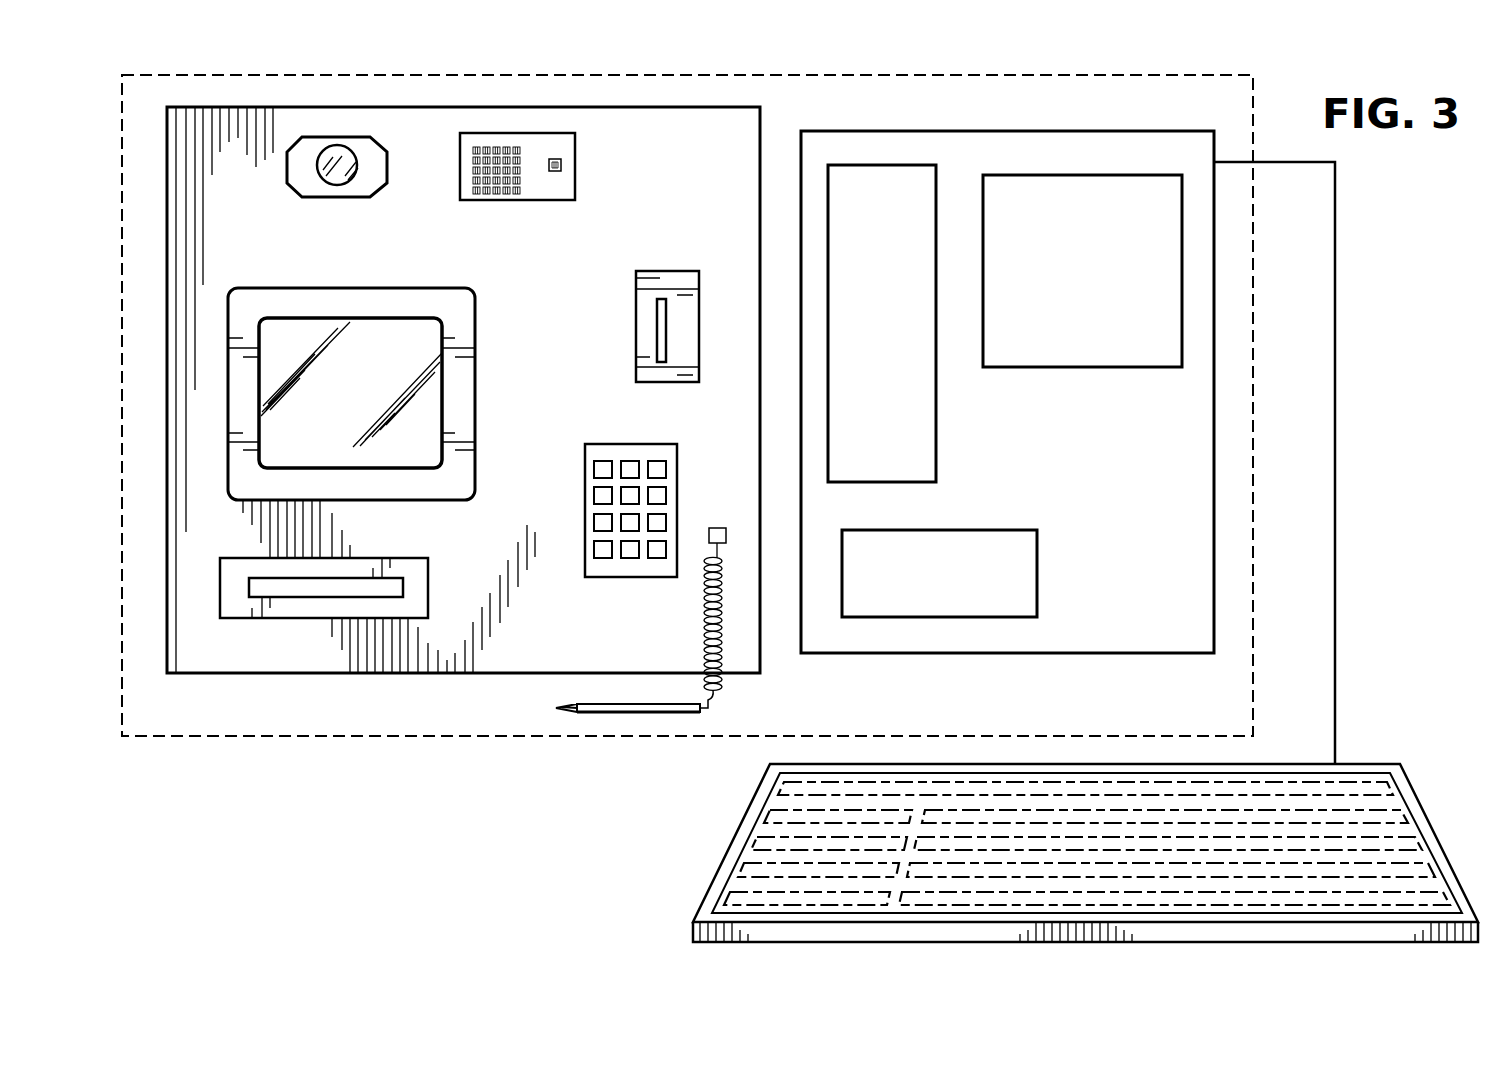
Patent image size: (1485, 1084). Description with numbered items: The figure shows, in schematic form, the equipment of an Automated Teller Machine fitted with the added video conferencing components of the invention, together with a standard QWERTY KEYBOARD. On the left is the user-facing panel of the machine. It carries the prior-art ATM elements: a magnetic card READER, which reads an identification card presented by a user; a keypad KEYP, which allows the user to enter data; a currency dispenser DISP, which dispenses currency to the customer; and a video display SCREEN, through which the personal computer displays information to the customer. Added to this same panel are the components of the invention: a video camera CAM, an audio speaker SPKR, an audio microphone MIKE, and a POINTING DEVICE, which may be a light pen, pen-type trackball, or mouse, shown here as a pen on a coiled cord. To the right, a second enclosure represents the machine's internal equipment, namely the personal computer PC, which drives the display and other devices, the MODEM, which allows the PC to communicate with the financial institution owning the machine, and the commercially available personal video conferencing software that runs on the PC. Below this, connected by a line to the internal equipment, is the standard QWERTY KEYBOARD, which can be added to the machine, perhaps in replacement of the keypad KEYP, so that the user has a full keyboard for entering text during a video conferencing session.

The video camera CAM is at (300, 181).
The audio speaker SPKR is at (484, 185).
The audio microphone MIKE is at (562, 165).
The video display SCREEN is at (355, 332).
The magnetic card reader READER is at (646, 309).
The keypad KEYP is at (640, 567).
The dispenser DISP is at (300, 607).
The pointing device POINTING DEVICE is at (557, 709).
The personal computer PC is at (882, 323).
The modem MODEM is at (939, 573).
The QWERTY keyboard QWERTY KEYBOARD is at (733, 848).